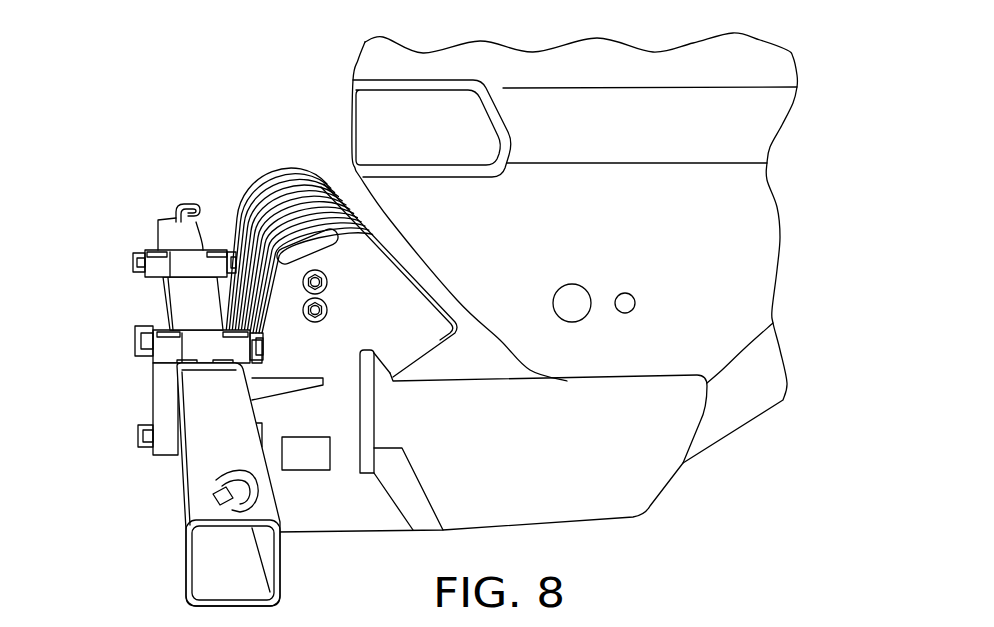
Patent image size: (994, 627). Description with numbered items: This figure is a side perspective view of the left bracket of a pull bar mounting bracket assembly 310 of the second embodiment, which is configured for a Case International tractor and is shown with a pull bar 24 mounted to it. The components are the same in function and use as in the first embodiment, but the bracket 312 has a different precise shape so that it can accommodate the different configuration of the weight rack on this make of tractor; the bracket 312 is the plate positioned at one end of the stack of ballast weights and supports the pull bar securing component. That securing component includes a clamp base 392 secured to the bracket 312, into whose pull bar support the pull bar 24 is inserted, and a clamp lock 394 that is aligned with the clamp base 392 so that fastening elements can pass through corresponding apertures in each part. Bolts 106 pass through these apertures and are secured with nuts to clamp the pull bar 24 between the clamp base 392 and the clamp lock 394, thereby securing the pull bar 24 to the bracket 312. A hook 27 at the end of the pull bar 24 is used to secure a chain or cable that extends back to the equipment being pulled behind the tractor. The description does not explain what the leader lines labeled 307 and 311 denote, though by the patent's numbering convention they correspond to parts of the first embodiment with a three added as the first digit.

The hook 27 is at (188, 200).
The bolt 106 is at (186, 260).
The pull bar mounting bracket assembly 310 is at (92, 289).
The bolt 307 is at (137, 352).
The clamp lock 394 is at (138, 404).
The pull bar 24 is at (203, 462).
The lower housing 311 is at (327, 517).
The bracket 312 is at (394, 324).
The clamp base 392 is at (241, 353).